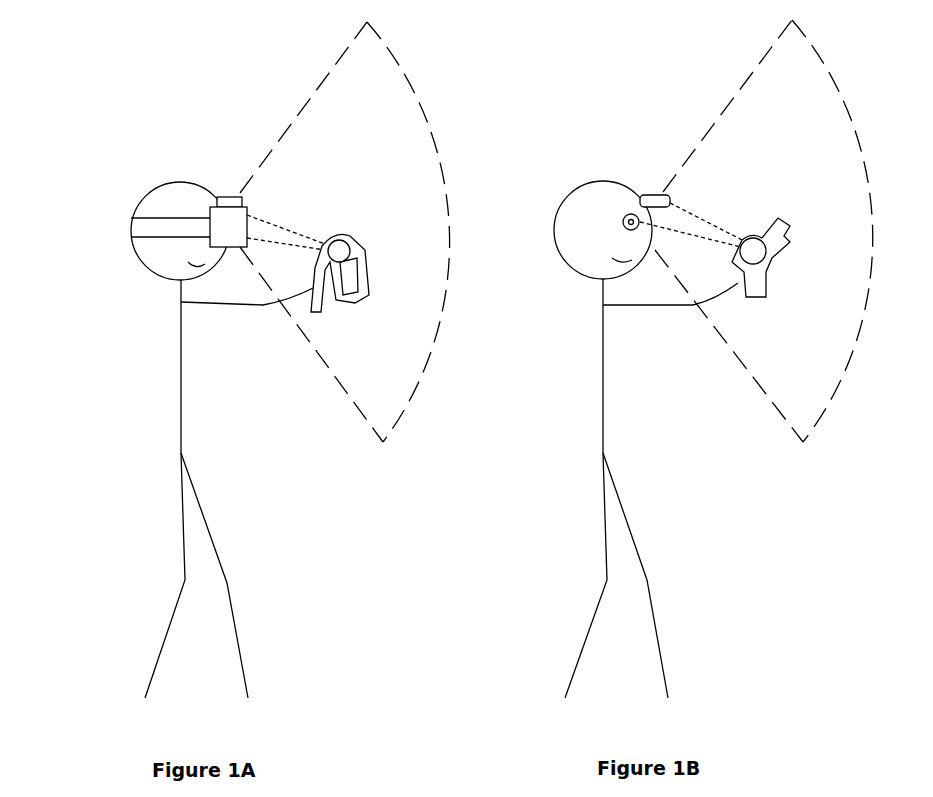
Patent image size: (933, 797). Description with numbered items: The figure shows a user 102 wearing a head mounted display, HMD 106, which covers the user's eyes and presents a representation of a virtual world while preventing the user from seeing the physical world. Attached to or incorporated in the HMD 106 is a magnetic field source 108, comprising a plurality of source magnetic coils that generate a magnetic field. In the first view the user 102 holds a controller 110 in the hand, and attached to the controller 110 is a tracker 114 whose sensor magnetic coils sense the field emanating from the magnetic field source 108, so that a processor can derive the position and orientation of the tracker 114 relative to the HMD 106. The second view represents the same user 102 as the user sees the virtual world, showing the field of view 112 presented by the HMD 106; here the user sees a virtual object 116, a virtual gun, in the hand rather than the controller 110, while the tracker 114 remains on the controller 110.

In FIG. 1A, the user 102 is at (136, 441).
In FIG. 1B, the user 102 is at (564, 441).
In FIG. 1A, the HMD 106 is at (263, 208).
In FIG. 1A, the magnetic field source 108 is at (221, 182).
In FIG. 1A, the controller 110 is at (385, 245).
In FIG. 1B, the field of view 112 is at (687, 116).
In FIG. 1A, the tracker 114 is at (330, 264).
In FIG. 1B, the tracker 114 is at (752, 266).
In FIG. 1B, the virtual object 116 is at (798, 255).